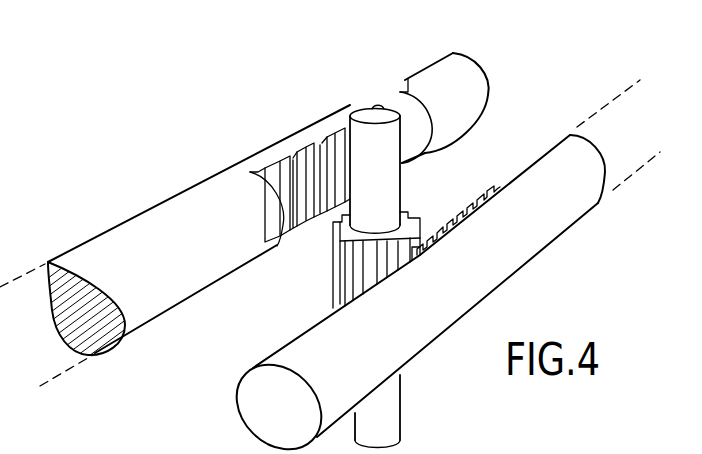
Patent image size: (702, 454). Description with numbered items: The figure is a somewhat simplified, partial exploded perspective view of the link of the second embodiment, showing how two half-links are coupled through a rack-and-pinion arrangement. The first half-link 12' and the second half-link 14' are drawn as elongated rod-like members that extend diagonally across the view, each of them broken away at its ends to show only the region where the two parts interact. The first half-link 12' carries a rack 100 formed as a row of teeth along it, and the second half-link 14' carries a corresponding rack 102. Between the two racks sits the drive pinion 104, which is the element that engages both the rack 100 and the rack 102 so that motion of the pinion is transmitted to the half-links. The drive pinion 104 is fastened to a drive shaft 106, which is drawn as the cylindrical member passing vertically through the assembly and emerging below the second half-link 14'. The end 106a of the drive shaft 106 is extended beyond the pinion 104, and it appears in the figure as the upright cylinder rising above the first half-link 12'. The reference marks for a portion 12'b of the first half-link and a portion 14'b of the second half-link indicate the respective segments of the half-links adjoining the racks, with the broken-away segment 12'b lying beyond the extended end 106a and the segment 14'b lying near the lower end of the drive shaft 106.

The half-link 12' is at (175, 266).
The portion of half-link 12'b is at (444, 90).
The half-link 14' is at (456, 258).
The portion of half-link 14'b is at (279, 383).
The rack 100 is at (275, 170).
The rack 102 is at (407, 263).
The drive pinion 104 is at (428, 195).
The drive shaft 106 is at (395, 420).
The end of drive shaft 106a is at (371, 112).